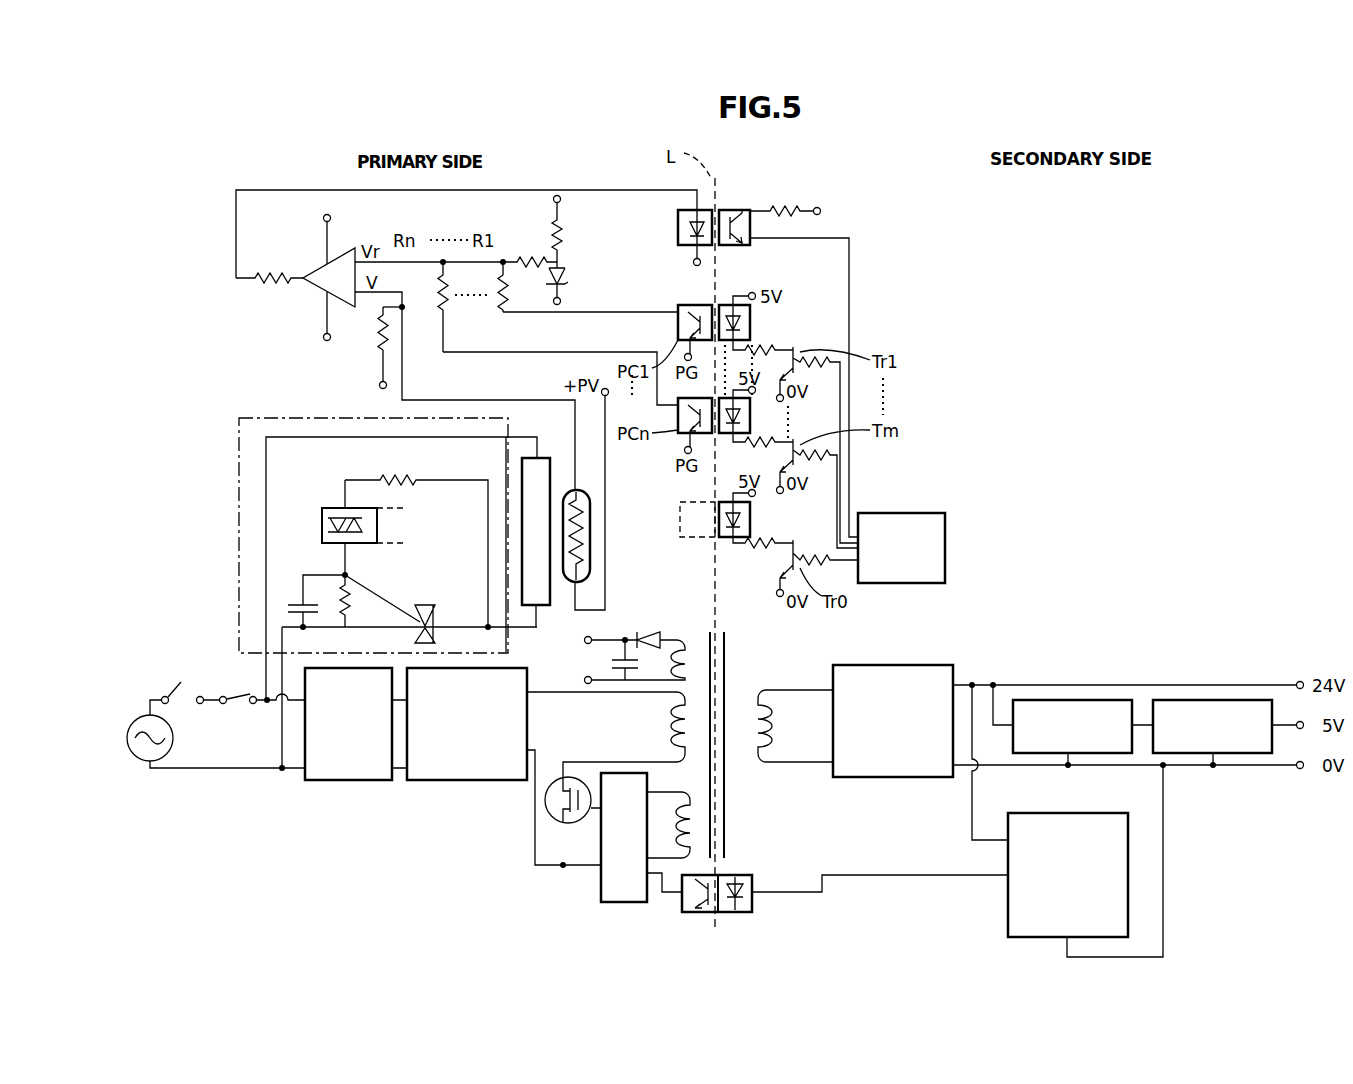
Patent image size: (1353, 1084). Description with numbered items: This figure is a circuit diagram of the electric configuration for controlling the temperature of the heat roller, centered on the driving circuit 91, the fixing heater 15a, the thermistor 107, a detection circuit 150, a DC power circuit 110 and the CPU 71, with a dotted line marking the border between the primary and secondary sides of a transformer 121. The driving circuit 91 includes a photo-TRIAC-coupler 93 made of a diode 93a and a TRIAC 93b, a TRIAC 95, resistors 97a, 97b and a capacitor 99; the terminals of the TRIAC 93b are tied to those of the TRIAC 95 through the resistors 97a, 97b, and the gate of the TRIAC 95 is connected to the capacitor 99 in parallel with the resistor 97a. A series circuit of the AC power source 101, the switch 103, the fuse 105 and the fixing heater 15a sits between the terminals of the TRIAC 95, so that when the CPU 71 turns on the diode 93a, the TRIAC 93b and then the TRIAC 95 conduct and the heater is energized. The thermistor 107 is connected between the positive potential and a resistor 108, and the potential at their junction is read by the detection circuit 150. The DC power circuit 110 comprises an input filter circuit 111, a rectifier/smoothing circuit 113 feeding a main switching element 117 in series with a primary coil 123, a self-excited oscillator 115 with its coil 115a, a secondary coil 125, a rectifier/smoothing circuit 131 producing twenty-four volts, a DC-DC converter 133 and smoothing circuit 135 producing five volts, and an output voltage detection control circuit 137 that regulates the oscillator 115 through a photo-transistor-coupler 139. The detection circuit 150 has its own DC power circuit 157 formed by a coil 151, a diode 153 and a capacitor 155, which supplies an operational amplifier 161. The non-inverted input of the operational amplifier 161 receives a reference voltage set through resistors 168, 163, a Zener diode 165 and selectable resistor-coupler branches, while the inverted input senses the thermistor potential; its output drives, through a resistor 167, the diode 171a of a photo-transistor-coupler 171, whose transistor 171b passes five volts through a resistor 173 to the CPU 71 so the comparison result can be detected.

The fixing heater 15a is at (550, 458).
The CPU 71 is at (900, 513).
The driving circuit 91 is at (239, 495).
The photo-TRIAC-coupler 93 is at (380, 516).
The diode 93a is at (722, 520).
The TRIAC 93b is at (366, 527).
The TRIAC 95 is at (433, 605).
The resistor 97a is at (358, 605).
The resistor 97b is at (412, 478).
The capacitor 99 is at (300, 598).
The power source 101 is at (174, 742).
The switch 103 is at (175, 688).
The fuse 105 is at (238, 697).
The thermistor 107 is at (590, 545).
The resistor 108 is at (378, 332).
The DC power circuit 110 is at (478, 812).
The input filter circuit 111 is at (333, 781).
The rectifier/smoothing circuit 113 is at (437, 781).
The oscillator 115 is at (601, 892).
The coil 115a is at (700, 834).
The main switching element 117 is at (566, 778).
The transformer 121 is at (681, 745).
The coil 123 is at (666, 727).
The coil 125 is at (810, 726).
The rectifier/smoothing circuit 131 is at (885, 664).
The DC-DC converter 133 is at (1080, 699).
The smoothing circuit 135 is at (1173, 699).
The output voltage detection control circuit 137 is at (1058, 813).
The photo-transistor-coupler 139 is at (752, 905).
The detection circuit 150 is at (872, 299).
The coil 151 is at (690, 656).
The diode 153 is at (650, 632).
The capacitor 155 is at (620, 658).
The DC power circuit 157 is at (702, 669).
The operational amplifier 161 is at (316, 282).
The resistor 163 is at (565, 238).
The Zener diode 165 is at (566, 277).
The resistor 167 is at (265, 280).
The resistor 168 is at (532, 259).
The photo-transistor-coupler 171 is at (705, 219).
The diode 171a is at (680, 222).
The transistor 171b is at (740, 210).
The resistor 173 is at (790, 212).